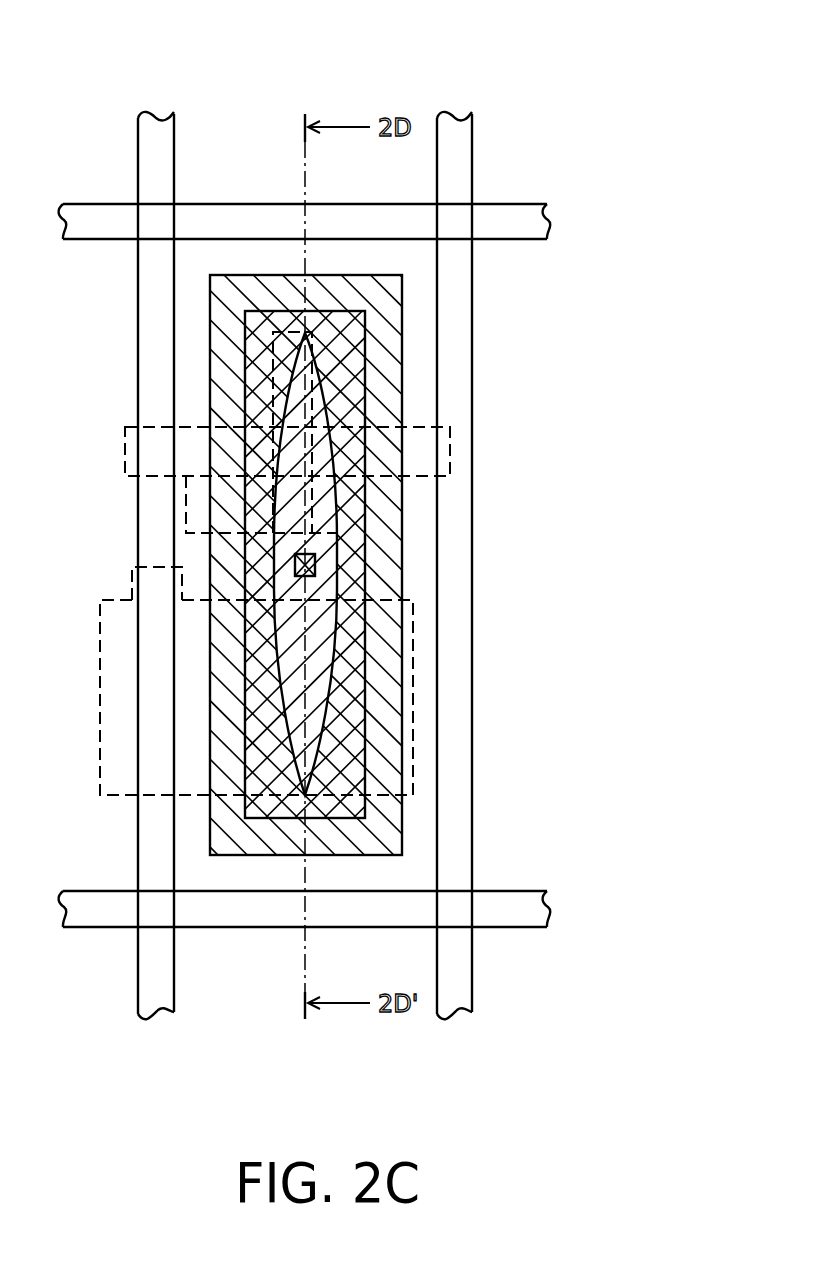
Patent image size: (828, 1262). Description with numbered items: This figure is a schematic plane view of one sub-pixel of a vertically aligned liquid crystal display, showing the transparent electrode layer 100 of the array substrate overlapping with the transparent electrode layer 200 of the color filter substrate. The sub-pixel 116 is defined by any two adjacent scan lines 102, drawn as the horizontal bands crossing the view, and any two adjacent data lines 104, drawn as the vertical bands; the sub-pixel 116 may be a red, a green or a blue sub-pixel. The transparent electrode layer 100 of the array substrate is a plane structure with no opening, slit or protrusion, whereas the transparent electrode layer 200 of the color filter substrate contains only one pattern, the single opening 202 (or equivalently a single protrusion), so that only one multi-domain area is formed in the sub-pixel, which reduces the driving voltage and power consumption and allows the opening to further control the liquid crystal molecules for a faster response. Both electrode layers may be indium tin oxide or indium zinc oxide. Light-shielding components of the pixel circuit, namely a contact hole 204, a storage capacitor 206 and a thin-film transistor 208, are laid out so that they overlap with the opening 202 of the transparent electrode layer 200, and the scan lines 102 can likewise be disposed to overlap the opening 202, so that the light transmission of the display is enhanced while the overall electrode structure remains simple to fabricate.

The transparent electrode layer of the array substrate 100 is at (358, 383).
The scan lines 102 is at (520, 223).
The data lines 104 is at (157, 143).
The sub-pixel 116 is at (420, 330).
The transparent electrode layer of the color filter substrate 200 is at (402, 582).
The opening 202 is at (280, 418).
The contact hole 204 is at (275, 556).
The storage capacitor 206 is at (417, 695).
The thin-film transistor 208 is at (455, 447).